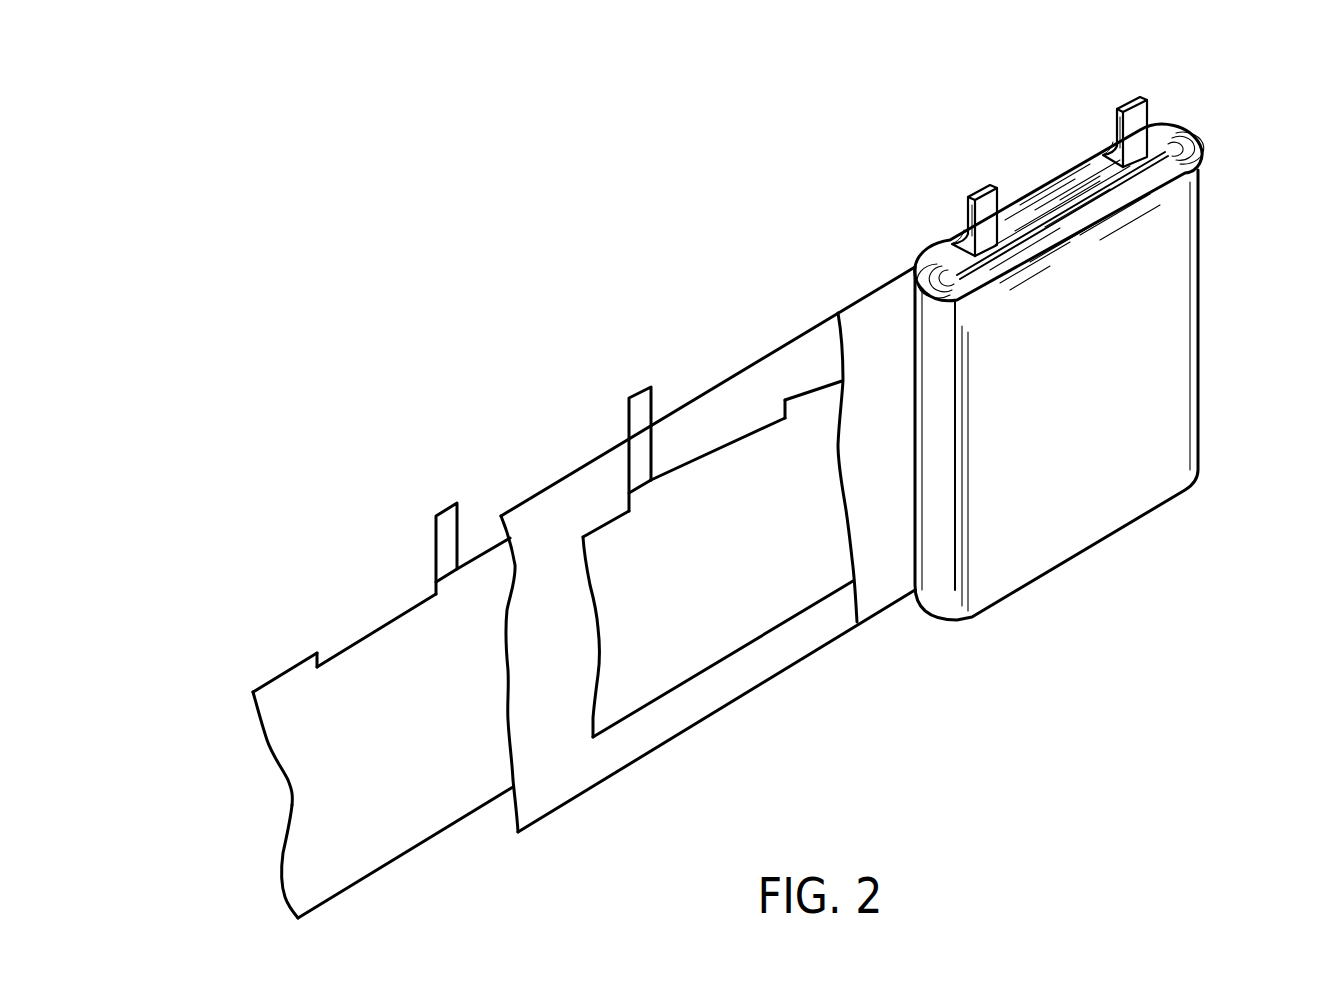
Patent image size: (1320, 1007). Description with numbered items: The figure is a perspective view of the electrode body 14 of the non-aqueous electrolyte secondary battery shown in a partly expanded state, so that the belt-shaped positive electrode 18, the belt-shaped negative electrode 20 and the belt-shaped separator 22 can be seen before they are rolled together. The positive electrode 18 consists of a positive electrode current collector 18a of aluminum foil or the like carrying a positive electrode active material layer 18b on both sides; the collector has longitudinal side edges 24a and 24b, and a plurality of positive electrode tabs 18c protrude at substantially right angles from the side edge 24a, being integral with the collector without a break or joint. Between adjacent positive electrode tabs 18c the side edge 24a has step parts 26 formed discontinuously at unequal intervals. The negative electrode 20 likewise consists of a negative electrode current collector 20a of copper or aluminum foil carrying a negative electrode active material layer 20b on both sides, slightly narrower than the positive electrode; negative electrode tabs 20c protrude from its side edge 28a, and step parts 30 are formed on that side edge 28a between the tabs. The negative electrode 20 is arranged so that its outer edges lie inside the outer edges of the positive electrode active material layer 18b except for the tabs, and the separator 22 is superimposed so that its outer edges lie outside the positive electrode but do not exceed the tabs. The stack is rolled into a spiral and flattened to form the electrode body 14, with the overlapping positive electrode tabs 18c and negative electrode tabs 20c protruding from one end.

The electrode body 14 is at (1219, 383).
The positive electrode 18 is at (271, 678).
The positive electrode current collector 18a is at (285, 827).
The positive electrode active material layer 18b is at (290, 738).
The positive electrode tab 18c is at (445, 507).
The negative electrode 20 is at (803, 563).
The negative electrode current collector 20a is at (660, 702).
The negative electrode active material layer 20b is at (730, 640).
The negative electrode tab 20c is at (637, 393).
The separator 22 is at (582, 783).
The side edge 24a is at (380, 623).
The side edge 24b is at (448, 832).
The step part 26 is at (323, 652).
The side edge 28a is at (725, 432).
The step part 30 is at (793, 395).